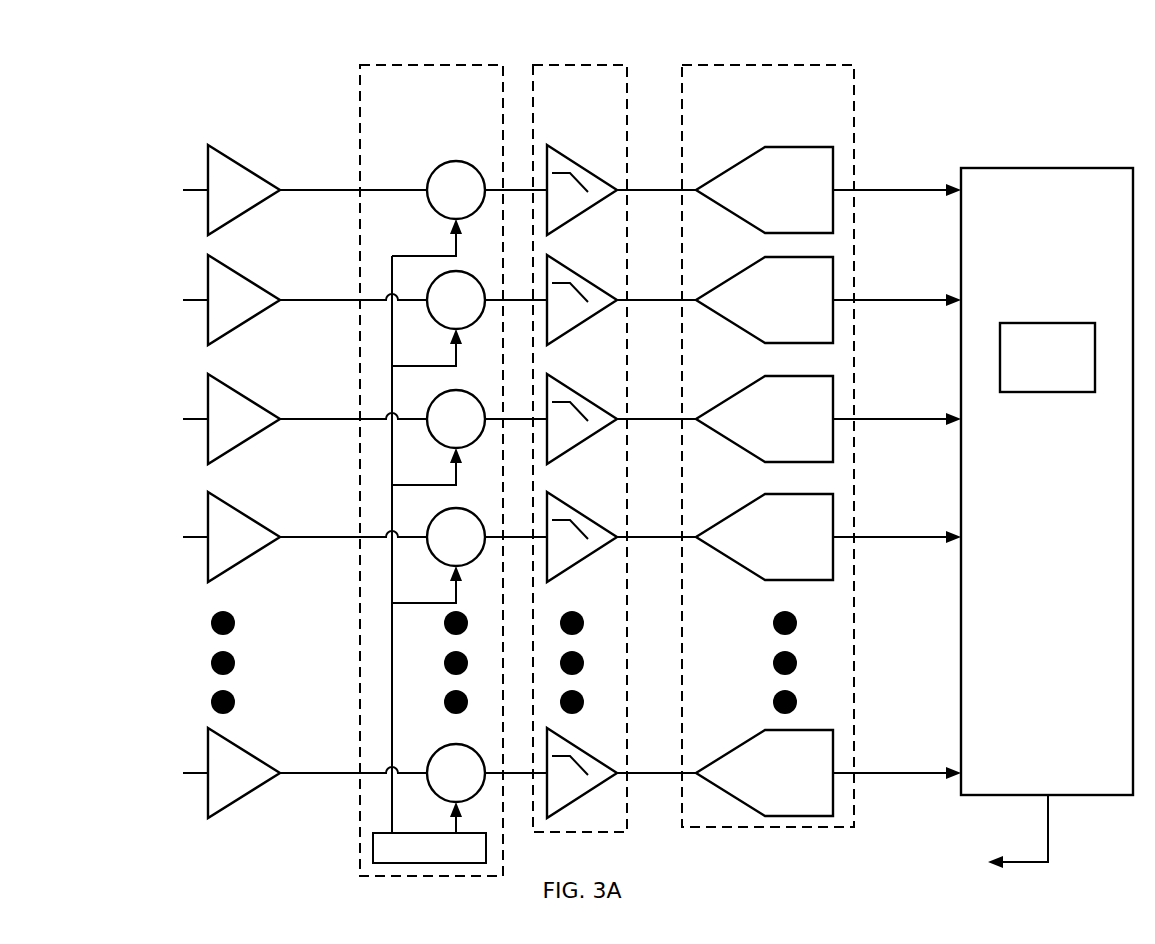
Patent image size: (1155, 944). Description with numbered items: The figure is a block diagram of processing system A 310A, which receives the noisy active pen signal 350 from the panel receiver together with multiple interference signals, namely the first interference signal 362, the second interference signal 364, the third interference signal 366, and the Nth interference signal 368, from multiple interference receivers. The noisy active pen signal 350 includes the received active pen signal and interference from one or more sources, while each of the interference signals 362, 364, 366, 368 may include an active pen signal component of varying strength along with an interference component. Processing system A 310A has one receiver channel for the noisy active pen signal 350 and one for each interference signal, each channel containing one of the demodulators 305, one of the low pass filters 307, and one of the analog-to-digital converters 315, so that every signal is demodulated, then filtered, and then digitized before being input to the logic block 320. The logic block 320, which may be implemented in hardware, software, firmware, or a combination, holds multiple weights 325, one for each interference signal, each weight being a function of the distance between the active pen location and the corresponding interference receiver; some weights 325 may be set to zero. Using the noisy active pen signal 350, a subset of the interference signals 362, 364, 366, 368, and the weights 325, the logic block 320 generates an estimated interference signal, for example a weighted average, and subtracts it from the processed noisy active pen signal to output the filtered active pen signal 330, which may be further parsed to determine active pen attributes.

The processing system A 310A is at (254, 112).
The noisy active pen signal 350 is at (256, 190).
The interference signal 1 362 is at (252, 300).
The interference signal 2 364 is at (252, 419).
The interference signal 3 366 is at (252, 537).
The interference signal N 368 is at (252, 773).
The demodulators 305 is at (453, 470).
The low pass filters 307 is at (614, 448).
The analog-to-digital converters 315 is at (821, 446).
The logic block 320 is at (1047, 481).
The weights 325 is at (1047, 357).
The filtered active pen signal 330 is at (954, 845).